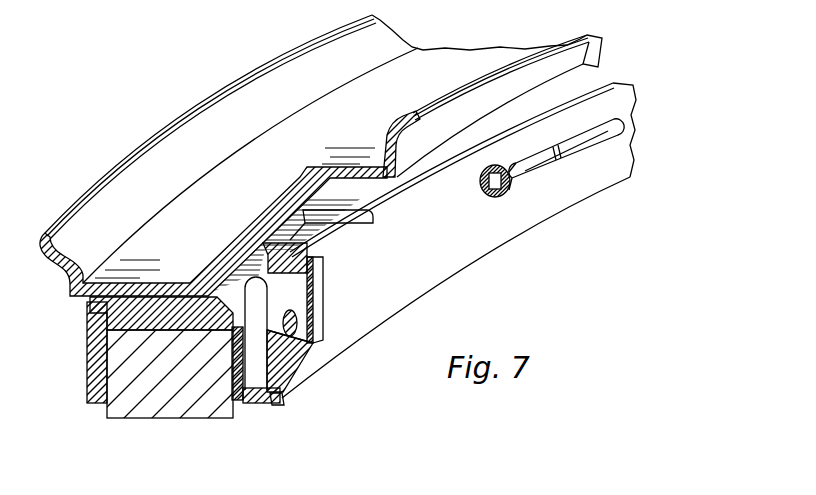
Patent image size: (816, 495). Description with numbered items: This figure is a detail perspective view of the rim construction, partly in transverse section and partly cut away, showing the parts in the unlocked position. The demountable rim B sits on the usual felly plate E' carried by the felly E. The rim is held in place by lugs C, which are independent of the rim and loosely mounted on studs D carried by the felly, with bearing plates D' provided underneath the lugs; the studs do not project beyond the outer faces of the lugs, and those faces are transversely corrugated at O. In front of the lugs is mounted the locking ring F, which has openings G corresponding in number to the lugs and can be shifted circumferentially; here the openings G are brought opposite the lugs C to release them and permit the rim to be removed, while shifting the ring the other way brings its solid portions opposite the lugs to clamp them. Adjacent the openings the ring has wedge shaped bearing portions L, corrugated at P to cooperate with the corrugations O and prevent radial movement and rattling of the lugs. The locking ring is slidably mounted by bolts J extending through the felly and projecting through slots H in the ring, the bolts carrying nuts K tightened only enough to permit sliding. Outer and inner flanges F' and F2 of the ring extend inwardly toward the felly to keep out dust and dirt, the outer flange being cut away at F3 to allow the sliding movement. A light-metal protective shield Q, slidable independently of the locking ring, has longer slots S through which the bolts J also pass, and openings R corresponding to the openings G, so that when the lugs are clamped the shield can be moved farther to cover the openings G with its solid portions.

The demountable rim B is at (299, 222).
The outer flange F' is at (343, 232).
The slots S is at (597, 128).
The protective ring or shield Q is at (627, 147).
The slots H is at (530, 158).
The nuts K is at (493, 203).
The bolts J is at (507, 193).
The cut away portion F3 is at (384, 206).
The wedge shaped bearing portions L is at (342, 237).
The lugs C is at (267, 252).
The openings G is at (315, 302).
The corrugations P is at (313, 320).
The openings R is at (317, 345).
The studs D is at (299, 265).
The locking ring F is at (299, 271).
The inner flange F2 is at (257, 397).
The corrugations O is at (230, 378).
The felly E is at (277, 282).
The bearing plates D' is at (299, 265).
The felly plate E' is at (299, 265).